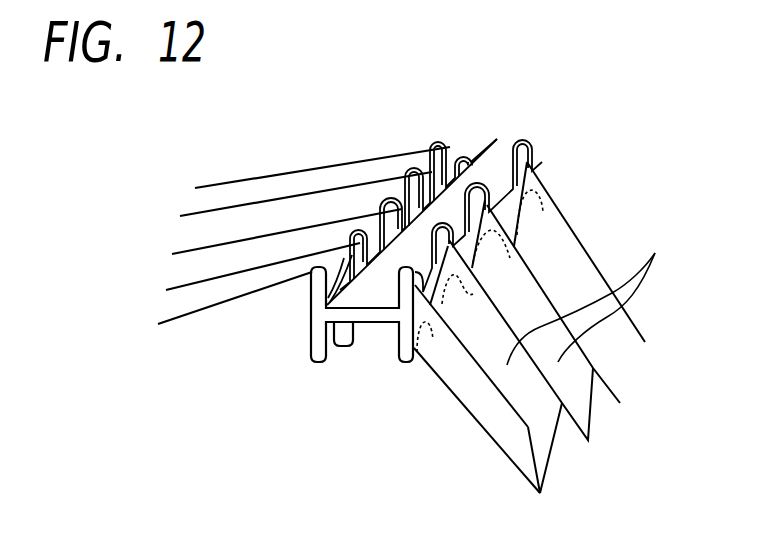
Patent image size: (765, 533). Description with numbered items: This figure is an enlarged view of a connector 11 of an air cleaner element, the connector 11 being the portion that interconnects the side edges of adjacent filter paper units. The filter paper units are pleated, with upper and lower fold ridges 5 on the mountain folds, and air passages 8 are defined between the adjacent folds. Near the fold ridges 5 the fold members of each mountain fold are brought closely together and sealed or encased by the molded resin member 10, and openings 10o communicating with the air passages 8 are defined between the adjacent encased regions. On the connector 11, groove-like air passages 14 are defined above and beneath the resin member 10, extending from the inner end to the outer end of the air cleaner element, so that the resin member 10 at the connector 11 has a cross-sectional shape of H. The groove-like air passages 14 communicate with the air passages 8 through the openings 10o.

The fold ridge 5 is at (217, 210).
The air passage 8 is at (292, 242).
The resin member 10 is at (313, 316).
The opening 10o is at (381, 233).
The connector 11 is at (503, 140).
The groove-like air passage 14 is at (465, 178).